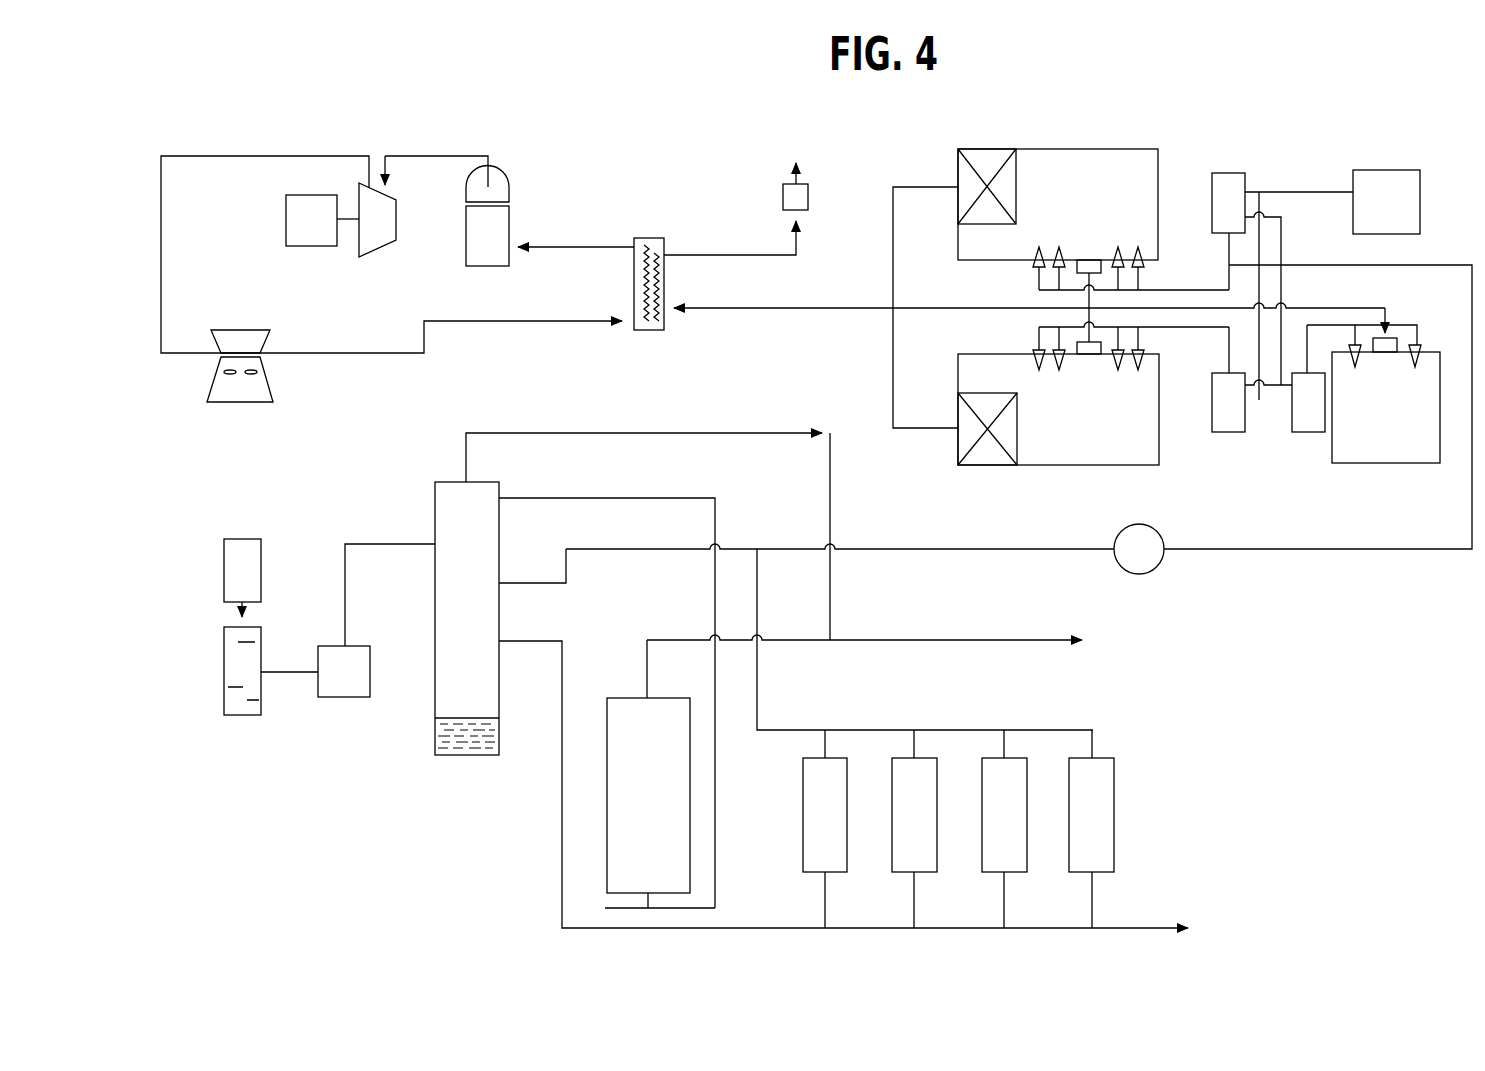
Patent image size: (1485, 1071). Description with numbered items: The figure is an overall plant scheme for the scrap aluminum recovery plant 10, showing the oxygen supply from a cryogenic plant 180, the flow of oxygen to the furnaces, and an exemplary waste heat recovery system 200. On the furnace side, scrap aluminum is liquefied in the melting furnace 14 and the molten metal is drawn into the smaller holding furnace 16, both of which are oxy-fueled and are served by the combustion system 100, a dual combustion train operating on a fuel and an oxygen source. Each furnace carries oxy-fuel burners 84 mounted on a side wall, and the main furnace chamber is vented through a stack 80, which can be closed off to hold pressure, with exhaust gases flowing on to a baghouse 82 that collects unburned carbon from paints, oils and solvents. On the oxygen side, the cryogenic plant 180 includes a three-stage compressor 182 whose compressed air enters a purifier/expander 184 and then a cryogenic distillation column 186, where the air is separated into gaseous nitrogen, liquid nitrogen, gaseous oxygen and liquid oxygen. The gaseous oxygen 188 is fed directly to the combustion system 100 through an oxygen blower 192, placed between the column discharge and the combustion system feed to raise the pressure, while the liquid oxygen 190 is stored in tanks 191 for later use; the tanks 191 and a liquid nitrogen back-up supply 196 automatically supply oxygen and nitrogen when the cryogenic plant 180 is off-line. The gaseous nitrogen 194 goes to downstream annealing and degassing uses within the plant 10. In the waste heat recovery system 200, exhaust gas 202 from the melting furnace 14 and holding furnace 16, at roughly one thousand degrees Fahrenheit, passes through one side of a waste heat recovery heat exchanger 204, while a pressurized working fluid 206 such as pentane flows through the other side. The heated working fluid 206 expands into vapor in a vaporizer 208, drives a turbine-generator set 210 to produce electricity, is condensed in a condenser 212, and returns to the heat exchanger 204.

The scrap aluminum recovery plant 10 is at (1460, 189).
The melting furnace 14 is at (1100, 149).
The holding furnace 16 is at (1405, 465).
The stack 80 is at (967, 305).
The baghouse 82 is at (808, 197).
The oxy-fuel burners 84 is at (1116, 252).
The combustion system 100 is at (1308, 244).
The cryogenic plant 180 is at (409, 829).
The three-stage compressor 182 is at (240, 715).
The purifier/expander 184 is at (328, 697).
The cryogenic distillation column 186 is at (434, 482).
The gaseous oxygen 188 is at (1330, 549).
The liquid oxygen 190 is at (562, 865).
The tanks 191 is at (838, 872).
The oxygen blower 192 is at (1140, 574).
The gaseous nitrogen 194 is at (733, 433).
The back-up nitrogen supply 196 is at (697, 497).
The waste heat recovery system 200 is at (598, 200).
The exhaust gas 202 is at (790, 309).
The waste heat recovery heat exchanger 204 is at (655, 238).
The working fluid 206 is at (587, 249).
The vaporizer 208 is at (512, 178).
The turbine-generator set 210 is at (222, 198).
The condenser 212 is at (240, 402).